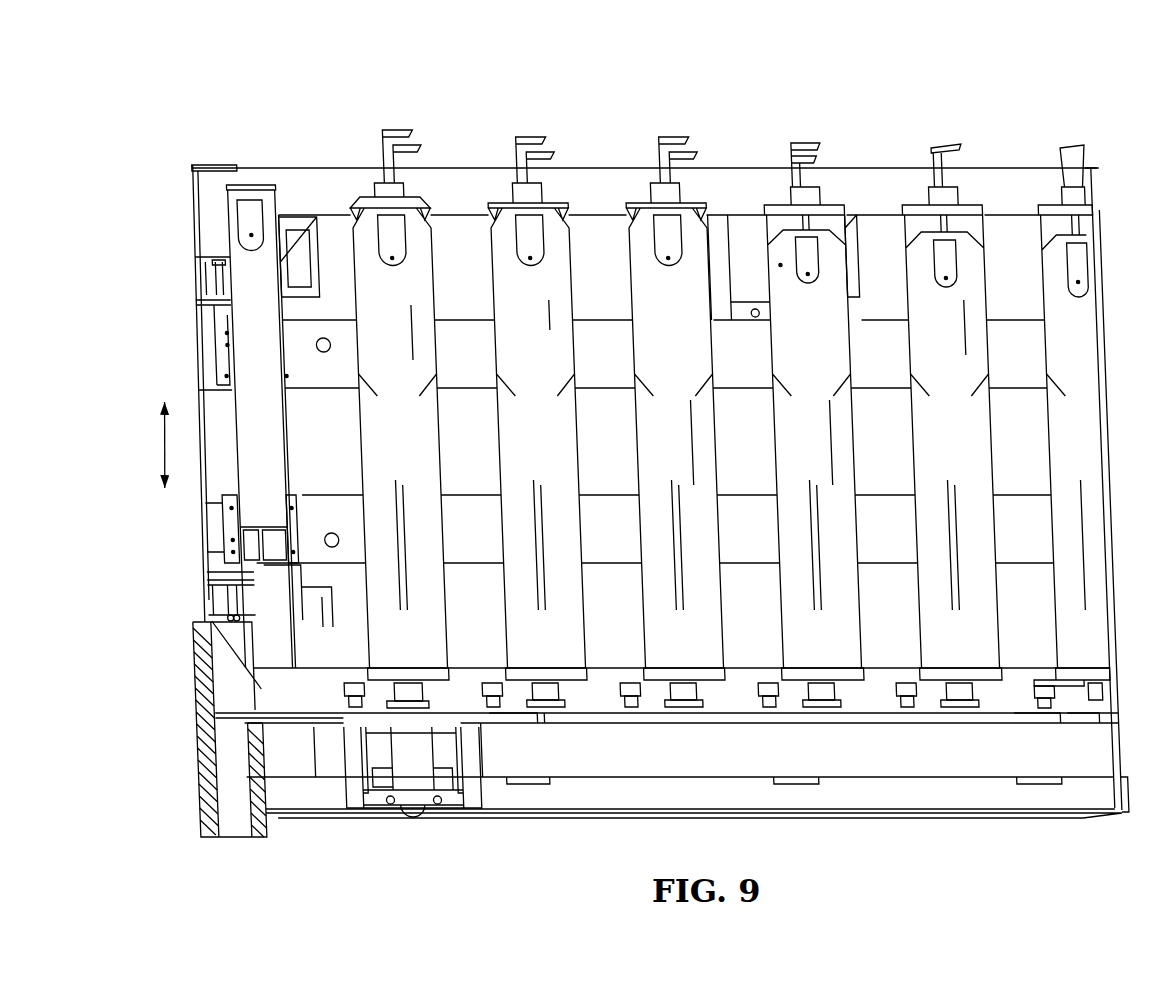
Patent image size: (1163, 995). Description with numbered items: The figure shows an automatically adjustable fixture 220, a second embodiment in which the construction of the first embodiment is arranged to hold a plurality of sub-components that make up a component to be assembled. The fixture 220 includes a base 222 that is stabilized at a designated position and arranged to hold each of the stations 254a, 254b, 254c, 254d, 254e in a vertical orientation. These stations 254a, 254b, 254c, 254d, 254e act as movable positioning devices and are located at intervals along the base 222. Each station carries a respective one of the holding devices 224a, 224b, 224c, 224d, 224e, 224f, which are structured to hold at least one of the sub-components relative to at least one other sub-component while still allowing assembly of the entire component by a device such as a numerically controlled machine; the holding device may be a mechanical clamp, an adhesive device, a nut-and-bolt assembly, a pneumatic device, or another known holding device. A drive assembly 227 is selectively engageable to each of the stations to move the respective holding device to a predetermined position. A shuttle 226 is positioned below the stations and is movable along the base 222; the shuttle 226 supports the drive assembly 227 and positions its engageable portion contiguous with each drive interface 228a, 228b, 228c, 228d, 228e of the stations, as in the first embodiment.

The adjustable fixture 220 is at (243, 133).
The base 222 is at (236, 712).
The holding device 224a is at (425, 118).
The holding device 224b is at (543, 120).
The holding device 224c is at (691, 122).
The holding device 224d is at (810, 128).
The holding device 224e is at (946, 128).
The holding device 224f is at (1070, 130).
The station 254a is at (427, 193).
The station 254b is at (555, 192).
The station 254c is at (696, 190).
The station 254d is at (829, 187).
The station 254e is at (969, 187).
The drive interface 228a is at (412, 686).
The drive interface 228b is at (560, 685).
The drive interface 228c is at (689, 677).
The drive interface 228d is at (830, 678).
The drive interface 228e is at (964, 677).
The drive assembly 227 is at (489, 762).
The shuttle 226 is at (487, 806).